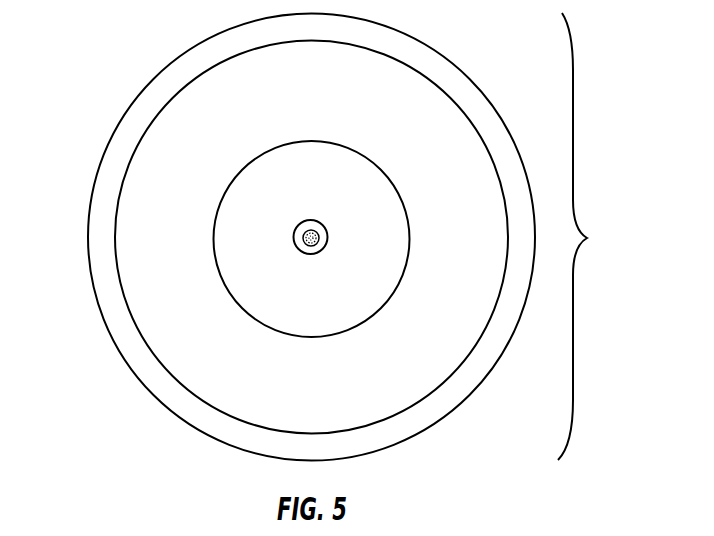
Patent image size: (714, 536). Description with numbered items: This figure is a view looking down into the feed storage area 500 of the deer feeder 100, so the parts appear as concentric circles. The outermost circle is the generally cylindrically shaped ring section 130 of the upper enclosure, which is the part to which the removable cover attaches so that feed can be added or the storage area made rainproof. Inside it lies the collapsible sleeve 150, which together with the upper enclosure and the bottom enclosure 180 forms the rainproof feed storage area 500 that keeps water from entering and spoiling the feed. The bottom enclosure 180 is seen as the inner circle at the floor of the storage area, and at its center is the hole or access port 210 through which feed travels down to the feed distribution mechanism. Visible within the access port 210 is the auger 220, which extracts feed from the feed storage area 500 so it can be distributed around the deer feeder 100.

The deer feeder 100 is at (595, 236).
The cylindrically shaped ring section 130 is at (159, 95).
The collapsible sleeve 150 is at (162, 231).
The bottom enclosure 180 is at (253, 283).
The access port 210 is at (312, 220).
The auger 220 is at (319, 238).
The feed storage area 500 is at (334, 303).